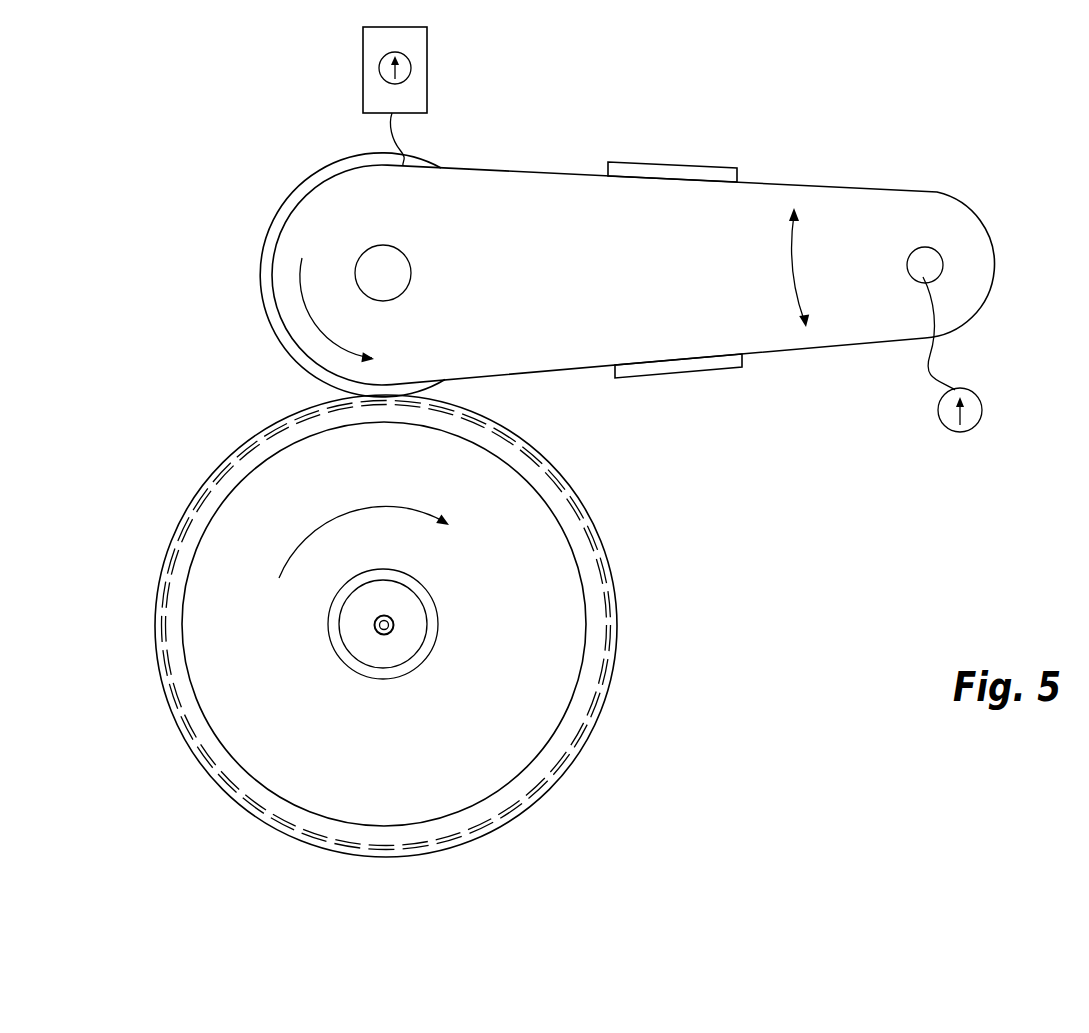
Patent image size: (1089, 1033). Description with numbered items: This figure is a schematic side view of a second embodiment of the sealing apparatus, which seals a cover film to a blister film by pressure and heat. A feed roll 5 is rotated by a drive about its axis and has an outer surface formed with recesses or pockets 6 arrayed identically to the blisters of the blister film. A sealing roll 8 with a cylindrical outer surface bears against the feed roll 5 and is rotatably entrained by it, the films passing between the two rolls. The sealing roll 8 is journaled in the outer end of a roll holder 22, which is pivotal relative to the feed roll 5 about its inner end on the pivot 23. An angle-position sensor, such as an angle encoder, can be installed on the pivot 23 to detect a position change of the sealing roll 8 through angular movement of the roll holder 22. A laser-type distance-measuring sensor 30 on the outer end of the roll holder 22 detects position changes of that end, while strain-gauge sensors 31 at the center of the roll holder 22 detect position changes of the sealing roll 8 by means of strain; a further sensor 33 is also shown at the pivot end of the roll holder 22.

The feed roll 5 is at (557, 679).
The recesses or pockets 6 is at (603, 555).
The sealing roll 8 is at (265, 271).
The roll holder 22 is at (863, 212).
The pivot 23 is at (935, 265).
The laser-type distance-measuring sensor 30 is at (427, 70).
The strain-gauge sensors 31 is at (681, 170).
The sensor 33 is at (960, 432).